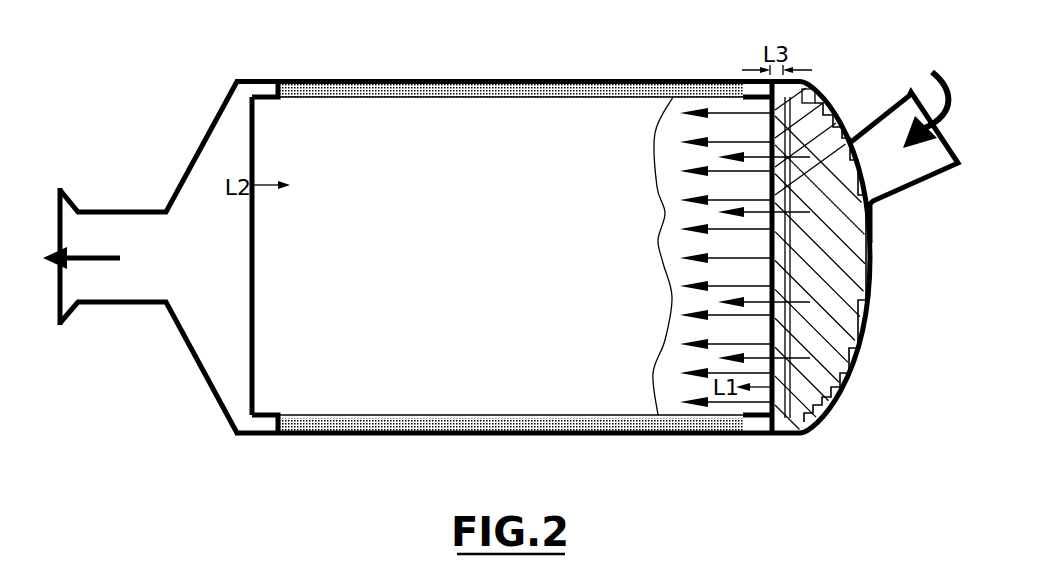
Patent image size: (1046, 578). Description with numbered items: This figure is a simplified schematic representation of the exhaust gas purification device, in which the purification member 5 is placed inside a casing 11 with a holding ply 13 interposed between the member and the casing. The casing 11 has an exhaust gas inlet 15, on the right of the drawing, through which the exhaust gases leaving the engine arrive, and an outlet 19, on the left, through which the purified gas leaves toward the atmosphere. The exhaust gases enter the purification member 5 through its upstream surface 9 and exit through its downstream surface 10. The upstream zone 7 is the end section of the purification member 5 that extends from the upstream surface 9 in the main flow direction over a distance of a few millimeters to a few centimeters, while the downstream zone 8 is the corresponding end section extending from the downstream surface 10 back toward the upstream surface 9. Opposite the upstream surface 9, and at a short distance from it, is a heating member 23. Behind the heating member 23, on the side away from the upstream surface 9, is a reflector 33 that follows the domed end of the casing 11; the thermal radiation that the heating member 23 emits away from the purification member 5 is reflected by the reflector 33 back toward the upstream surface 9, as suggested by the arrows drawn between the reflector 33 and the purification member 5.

The exhaust gas purification member 5 is at (505, 145).
The upstream zone 7 is at (728, 110).
The downstream zone 8 is at (263, 115).
The upstream surface 9 is at (775, 412).
The downstream surface 10 is at (251, 388).
The casing 11 is at (628, 82).
The holding ply 13 is at (430, 85).
The exhaust gas inlet 15 is at (903, 163).
The outlet 19 is at (105, 302).
The heating member 23 is at (820, 93).
The reflector 33 is at (837, 110).